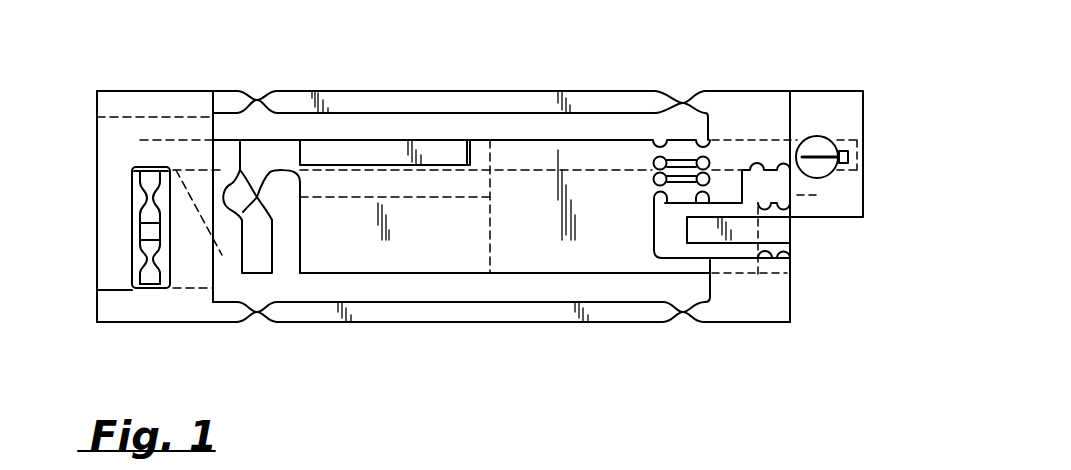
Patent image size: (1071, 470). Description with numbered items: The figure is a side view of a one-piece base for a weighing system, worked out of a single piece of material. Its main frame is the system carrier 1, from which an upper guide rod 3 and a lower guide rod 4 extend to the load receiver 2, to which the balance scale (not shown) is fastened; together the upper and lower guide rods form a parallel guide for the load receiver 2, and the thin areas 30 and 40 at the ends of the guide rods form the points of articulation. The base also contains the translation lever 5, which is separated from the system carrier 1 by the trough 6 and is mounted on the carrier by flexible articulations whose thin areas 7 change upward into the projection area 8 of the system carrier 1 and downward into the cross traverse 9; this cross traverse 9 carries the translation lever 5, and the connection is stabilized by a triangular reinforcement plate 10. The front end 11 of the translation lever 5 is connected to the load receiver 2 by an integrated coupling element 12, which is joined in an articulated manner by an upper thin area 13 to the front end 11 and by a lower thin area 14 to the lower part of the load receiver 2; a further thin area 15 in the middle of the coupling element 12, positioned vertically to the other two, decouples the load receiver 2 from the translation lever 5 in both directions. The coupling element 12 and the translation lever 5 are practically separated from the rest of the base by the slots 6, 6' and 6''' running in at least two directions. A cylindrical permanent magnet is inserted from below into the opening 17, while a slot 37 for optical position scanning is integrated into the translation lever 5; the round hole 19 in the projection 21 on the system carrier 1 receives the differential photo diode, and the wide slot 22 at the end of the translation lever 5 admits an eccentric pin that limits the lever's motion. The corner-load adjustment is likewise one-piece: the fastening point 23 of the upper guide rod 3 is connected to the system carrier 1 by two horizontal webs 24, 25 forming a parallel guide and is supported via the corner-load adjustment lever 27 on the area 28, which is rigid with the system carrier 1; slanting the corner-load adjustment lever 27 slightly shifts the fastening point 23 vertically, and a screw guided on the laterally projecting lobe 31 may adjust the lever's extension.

The system carrier 1 is at (524, 258).
The load receiver 2 is at (126, 308).
The upper guide rod 3 is at (430, 103).
The lower guide rod 4 is at (450, 310).
The translation lever 5 is at (181, 150).
The trough (slot) 6 is at (589, 213).
The slot 6' is at (144, 334).
The slot 6''' is at (333, 317).
The thin areas of the flexible articulations 7 is at (260, 197).
The projection area 8 is at (262, 152).
The cross traverse 9 is at (252, 262).
The triangular reinforcement plate 10 is at (233, 237).
The front end of translation lever 11 is at (137, 150).
The coupling element 12 is at (140, 210).
The upper thin area 13 is at (140, 185).
The lower thin area 14 is at (140, 267).
The further thin area 15 is at (148, 230).
The opening 17 is at (497, 155).
The round hole 19 is at (820, 177).
The projection 21 is at (852, 120).
The slot 22 is at (852, 158).
The fastening point (area) 23 is at (721, 100).
The horizontal web 24 is at (680, 143).
The horizontal web 25 is at (658, 205).
The corner-load adjustment lever 27 is at (793, 238).
The area 28 is at (760, 298).
The thin area 30 is at (683, 103).
The laterally projecting lobe 31 is at (378, 147).
The slot 37 is at (817, 157).
The thin area 40 is at (683, 313).